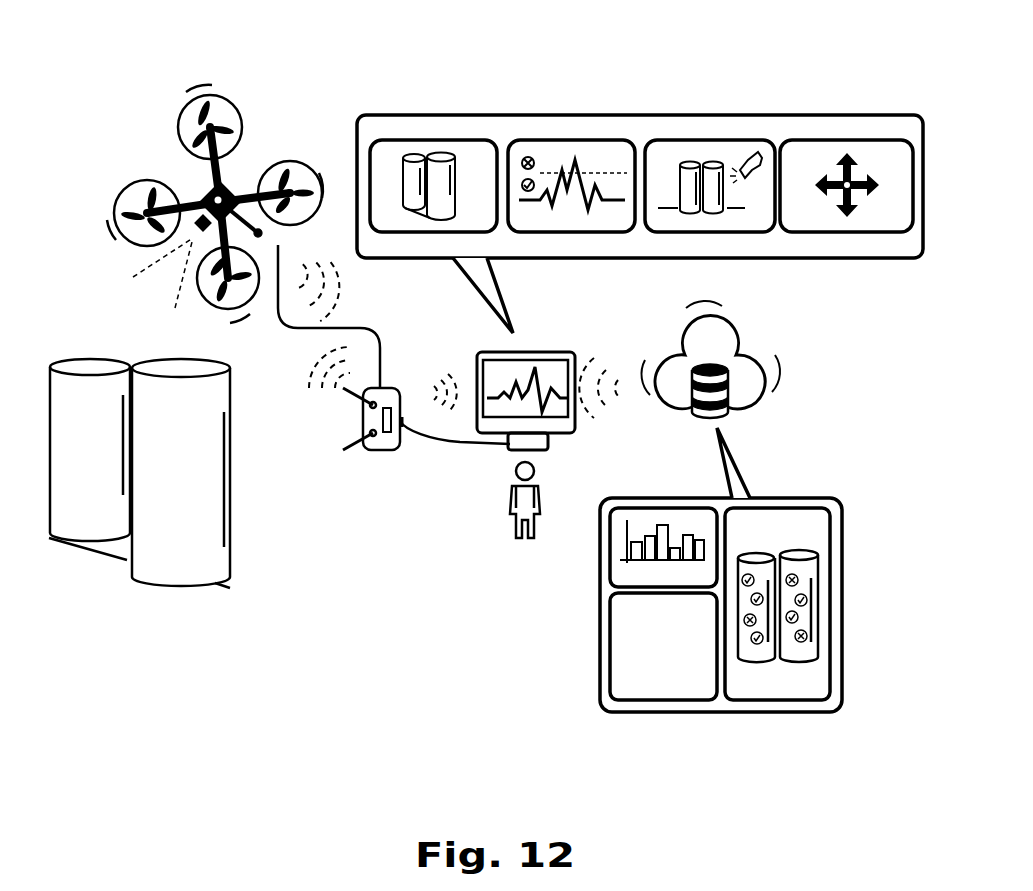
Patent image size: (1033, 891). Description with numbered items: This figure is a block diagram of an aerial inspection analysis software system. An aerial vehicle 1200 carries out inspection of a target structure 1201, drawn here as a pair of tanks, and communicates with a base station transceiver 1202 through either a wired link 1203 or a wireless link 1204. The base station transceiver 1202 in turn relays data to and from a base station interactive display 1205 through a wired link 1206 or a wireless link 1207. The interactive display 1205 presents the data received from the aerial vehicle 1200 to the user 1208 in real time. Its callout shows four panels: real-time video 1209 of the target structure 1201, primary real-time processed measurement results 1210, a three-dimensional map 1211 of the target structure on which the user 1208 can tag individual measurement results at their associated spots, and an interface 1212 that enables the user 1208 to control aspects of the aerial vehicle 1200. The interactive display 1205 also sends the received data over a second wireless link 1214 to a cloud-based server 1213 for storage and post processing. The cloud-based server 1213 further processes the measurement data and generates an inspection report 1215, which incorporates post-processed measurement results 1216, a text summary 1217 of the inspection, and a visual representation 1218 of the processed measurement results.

The aerial vehicle 1200 is at (267, 143).
The target structure 1201 is at (250, 473).
The base station transceiver 1202 is at (372, 458).
The wired link 1203 is at (164, 293).
The wireless link 1204 is at (308, 390).
The base station interactive display 1205 is at (535, 347).
The wired link 1206 is at (423, 447).
The wireless link 1207 is at (433, 363).
The user 1208 is at (523, 548).
The real-time video 1209 is at (427, 130).
The primary real-time processed measurement results 1210 is at (572, 130).
The 3-dimensional map 1211 is at (707, 130).
The interface 1212 is at (848, 130).
The cloud-based server 1213 is at (762, 333).
The second wireless link 1214 is at (597, 420).
The inspection report 1215 is at (785, 497).
The post-processed measurement results 1216 is at (603, 550).
The text summary 1217 is at (603, 640).
The visual representation 1218 is at (837, 543).